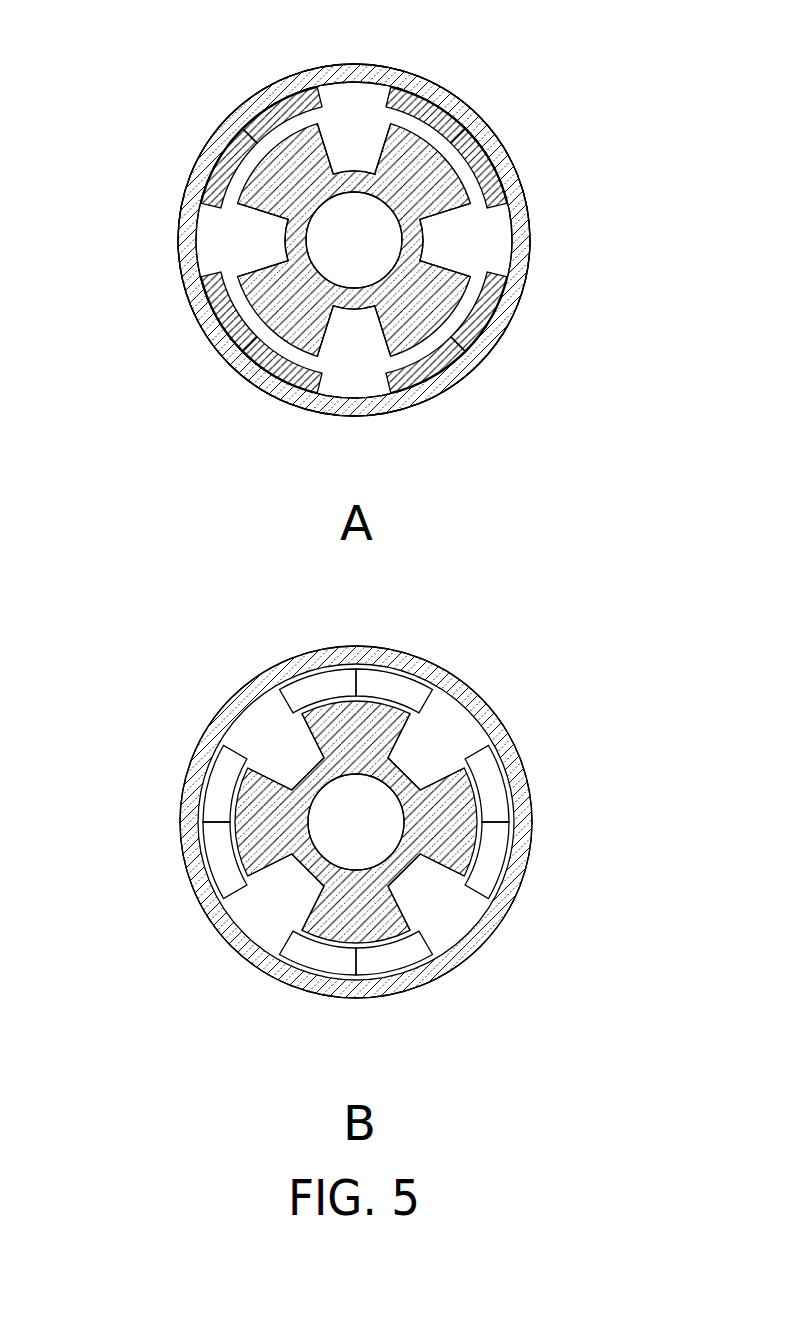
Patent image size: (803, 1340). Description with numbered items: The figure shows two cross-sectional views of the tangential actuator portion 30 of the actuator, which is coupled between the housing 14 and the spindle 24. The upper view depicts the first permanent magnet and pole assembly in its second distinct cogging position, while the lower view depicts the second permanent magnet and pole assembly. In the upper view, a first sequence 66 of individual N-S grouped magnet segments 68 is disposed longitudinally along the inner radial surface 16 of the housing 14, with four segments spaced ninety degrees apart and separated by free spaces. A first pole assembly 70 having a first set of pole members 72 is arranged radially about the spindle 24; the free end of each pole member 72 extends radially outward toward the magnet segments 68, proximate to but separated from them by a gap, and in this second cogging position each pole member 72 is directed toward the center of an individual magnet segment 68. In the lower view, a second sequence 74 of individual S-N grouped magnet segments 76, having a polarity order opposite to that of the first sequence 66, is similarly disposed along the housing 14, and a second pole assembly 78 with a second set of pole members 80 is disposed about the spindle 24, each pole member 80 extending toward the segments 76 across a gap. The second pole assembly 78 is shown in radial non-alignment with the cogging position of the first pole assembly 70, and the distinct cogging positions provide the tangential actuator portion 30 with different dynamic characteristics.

The housing 14 is at (565, 825).
The inner radial surface 16 is at (366, 392).
The spindle 24 is at (327, 258).
The tangential actuator portion 30 is at (108, 143).
The first sequence 66 is at (559, 90).
The individual N-S grouped magnet segments 68 is at (318, 95).
The first pole assembly 70 is at (288, 246).
The first set of pole members 72 is at (327, 143).
The second sequence 74 is at (592, 698).
The individual S-N grouped magnet segments 76 is at (236, 745).
The second pole assembly 78 is at (298, 862).
The second set of pole members 80 is at (310, 742).